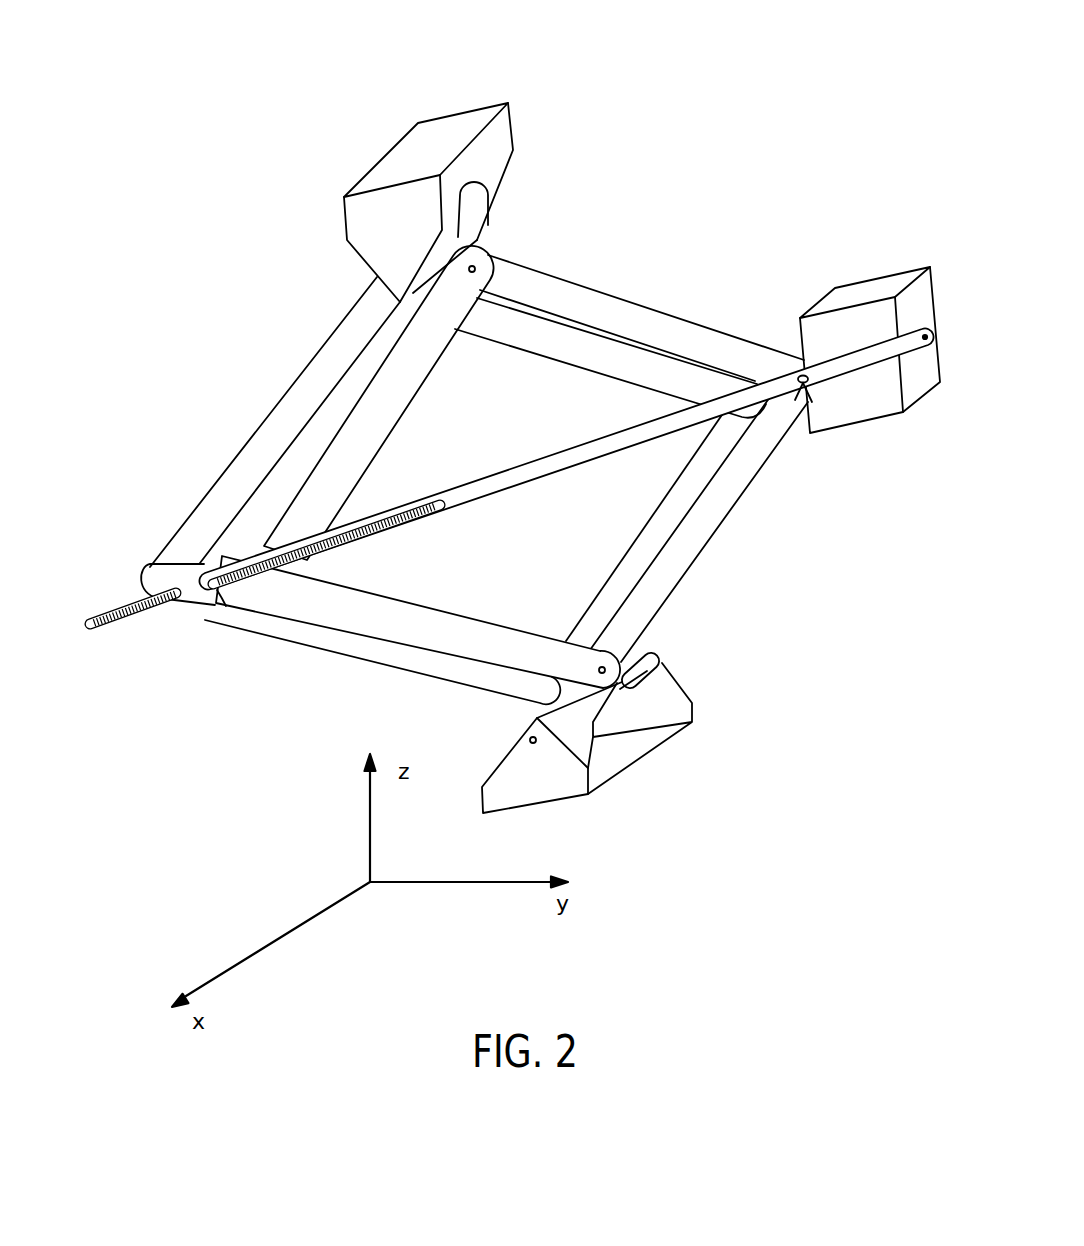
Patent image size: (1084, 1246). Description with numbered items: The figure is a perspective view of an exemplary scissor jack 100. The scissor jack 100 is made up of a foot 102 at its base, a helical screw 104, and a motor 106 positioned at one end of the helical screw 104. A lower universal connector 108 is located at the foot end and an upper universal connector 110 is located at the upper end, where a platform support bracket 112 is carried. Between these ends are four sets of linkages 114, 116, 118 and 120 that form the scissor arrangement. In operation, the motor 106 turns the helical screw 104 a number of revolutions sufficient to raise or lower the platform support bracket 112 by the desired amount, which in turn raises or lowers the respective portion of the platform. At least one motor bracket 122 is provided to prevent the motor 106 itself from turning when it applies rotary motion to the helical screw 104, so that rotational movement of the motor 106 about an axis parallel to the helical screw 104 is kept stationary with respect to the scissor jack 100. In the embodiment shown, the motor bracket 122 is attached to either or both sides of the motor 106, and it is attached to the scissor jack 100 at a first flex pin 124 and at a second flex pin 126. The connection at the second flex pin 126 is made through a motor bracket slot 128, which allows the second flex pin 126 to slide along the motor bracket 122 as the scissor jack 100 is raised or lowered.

The scissor jack 100 is at (724, 80).
The foot 102 is at (645, 762).
The helical screw 104 is at (112, 626).
The motor 106 is at (875, 278).
The lower universal connector 108 is at (658, 660).
The upper universal connector 110 is at (482, 247).
The platform support bracket 112 is at (460, 127).
The linkage 114 is at (712, 548).
The linkage 116 is at (403, 648).
The linkage 118 is at (646, 302).
The linkage 120 is at (275, 410).
The motor bracket 122 is at (583, 454).
The first flex pin 124 is at (812, 395).
The second flex pin 126 is at (222, 594).
The motor bracket slot 128 is at (367, 520).